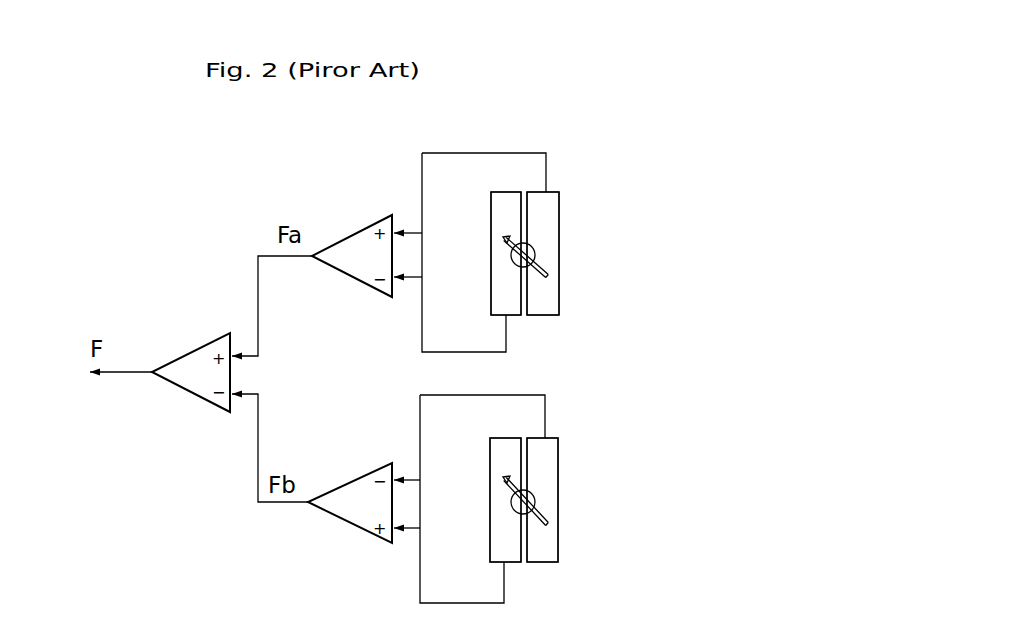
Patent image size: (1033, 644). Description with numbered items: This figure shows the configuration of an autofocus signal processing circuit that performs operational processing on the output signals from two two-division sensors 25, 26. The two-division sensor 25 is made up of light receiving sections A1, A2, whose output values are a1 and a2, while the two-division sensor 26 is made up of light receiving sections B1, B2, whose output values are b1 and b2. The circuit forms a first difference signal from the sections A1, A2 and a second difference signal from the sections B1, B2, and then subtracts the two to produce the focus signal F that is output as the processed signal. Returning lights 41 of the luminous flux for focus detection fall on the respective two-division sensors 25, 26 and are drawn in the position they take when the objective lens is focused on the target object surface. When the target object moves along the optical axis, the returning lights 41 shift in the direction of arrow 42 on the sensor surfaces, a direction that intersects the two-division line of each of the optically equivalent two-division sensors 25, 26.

The two-division sensor 25 is at (562, 254).
The two-division sensor 26 is at (562, 490).
The returning light 41 is at (537, 259).
The arrow 42 is at (506, 239).
The light receiving section A1 is at (545, 231).
The light receiving section A2 is at (510, 298).
The light receiving section B1 is at (541, 462).
The light receiving section B2 is at (510, 548).